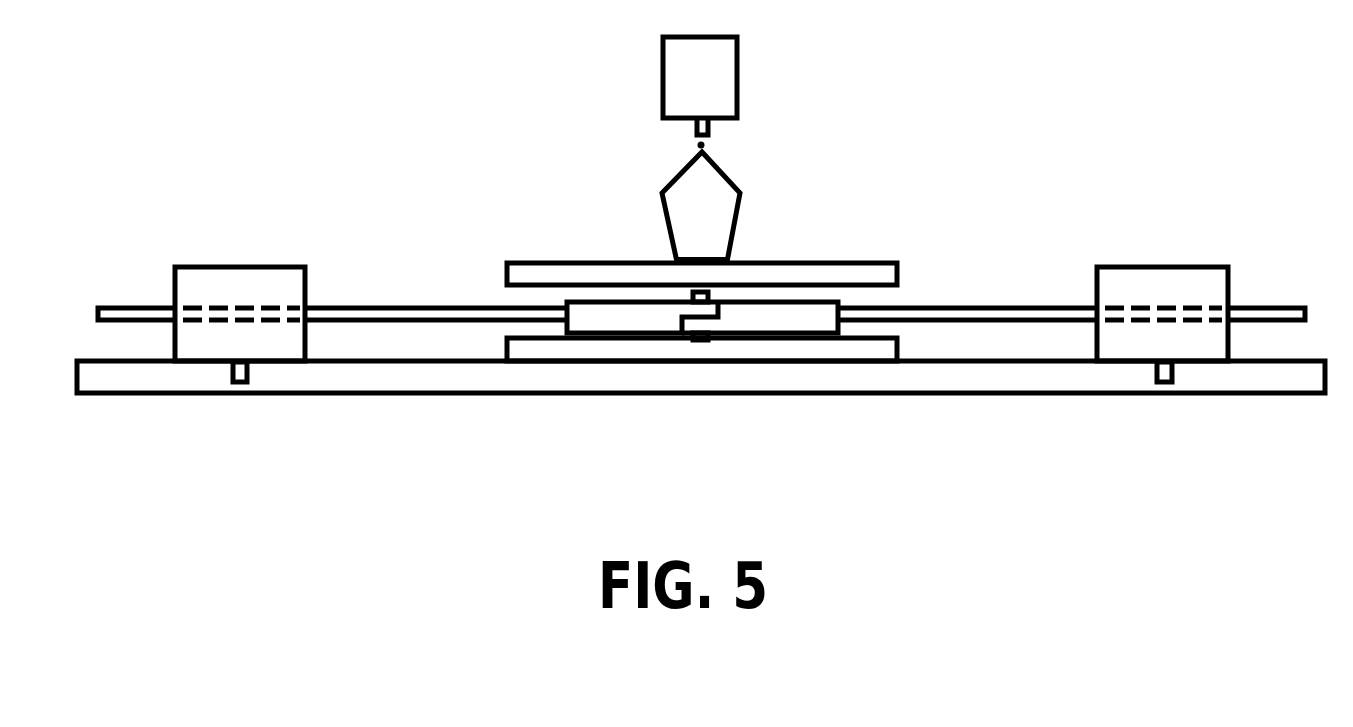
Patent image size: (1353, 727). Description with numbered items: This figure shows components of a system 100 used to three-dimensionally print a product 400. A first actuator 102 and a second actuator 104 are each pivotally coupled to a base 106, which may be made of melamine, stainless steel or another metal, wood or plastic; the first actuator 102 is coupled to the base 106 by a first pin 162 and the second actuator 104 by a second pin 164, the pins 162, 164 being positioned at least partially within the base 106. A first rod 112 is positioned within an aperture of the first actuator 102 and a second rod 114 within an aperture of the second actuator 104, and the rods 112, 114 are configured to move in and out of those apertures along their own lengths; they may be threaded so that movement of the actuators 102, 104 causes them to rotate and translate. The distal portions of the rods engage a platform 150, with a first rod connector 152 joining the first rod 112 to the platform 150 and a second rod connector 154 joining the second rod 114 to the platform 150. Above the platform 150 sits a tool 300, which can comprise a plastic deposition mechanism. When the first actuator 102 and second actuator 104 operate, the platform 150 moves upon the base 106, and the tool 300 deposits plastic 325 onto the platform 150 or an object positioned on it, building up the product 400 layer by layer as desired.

The system 100 is at (994, 88).
The first actuator 102 is at (225, 283).
The second actuator 104 is at (1140, 285).
The base 106 is at (430, 377).
The first rod 112 is at (408, 313).
The second rod 114 is at (958, 316).
The platform 150 is at (688, 324).
The first rod connector 152 is at (605, 313).
The second rod connector 154 is at (770, 317).
The first pin 162 is at (235, 377).
The second pin 164 is at (1158, 377).
The tool 300 is at (690, 75).
The plastic 325 is at (705, 145).
The product 400 is at (690, 203).